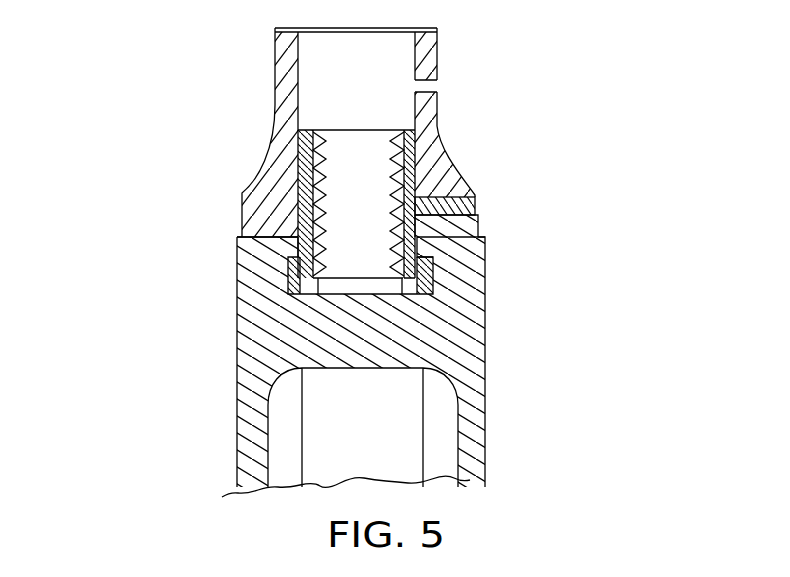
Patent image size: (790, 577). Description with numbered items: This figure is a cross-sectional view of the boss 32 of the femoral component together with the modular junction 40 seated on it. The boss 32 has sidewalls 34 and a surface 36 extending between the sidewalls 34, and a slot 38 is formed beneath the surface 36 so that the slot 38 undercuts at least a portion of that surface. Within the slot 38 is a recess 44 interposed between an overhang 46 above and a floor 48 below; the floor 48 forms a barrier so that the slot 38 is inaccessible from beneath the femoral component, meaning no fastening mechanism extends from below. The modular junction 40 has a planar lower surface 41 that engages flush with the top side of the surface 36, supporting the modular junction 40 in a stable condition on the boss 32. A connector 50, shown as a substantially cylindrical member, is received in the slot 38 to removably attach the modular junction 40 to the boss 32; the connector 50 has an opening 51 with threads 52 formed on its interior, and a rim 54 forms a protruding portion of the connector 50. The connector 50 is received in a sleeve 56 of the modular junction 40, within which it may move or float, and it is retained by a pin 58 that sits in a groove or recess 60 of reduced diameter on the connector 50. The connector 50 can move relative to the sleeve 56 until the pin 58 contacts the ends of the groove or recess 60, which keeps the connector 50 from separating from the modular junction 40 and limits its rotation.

The boss 32 is at (242, 326).
The sidewalls 34 is at (487, 439).
The surface 36 is at (478, 225).
The slot 38 is at (485, 296).
The modular junction 40 is at (277, 136).
The planar lower surface 41 is at (485, 262).
The recess 44 is at (288, 299).
The overhang 46 is at (238, 237).
The floor 48 is at (485, 327).
The connector 50 is at (415, 143).
The opening 51 is at (346, 152).
The threads 52 is at (320, 190).
The rim 54 is at (440, 270).
The sleeve 56 is at (440, 37).
The pin 58 is at (478, 203).
The groove or recess 60 is at (448, 167).